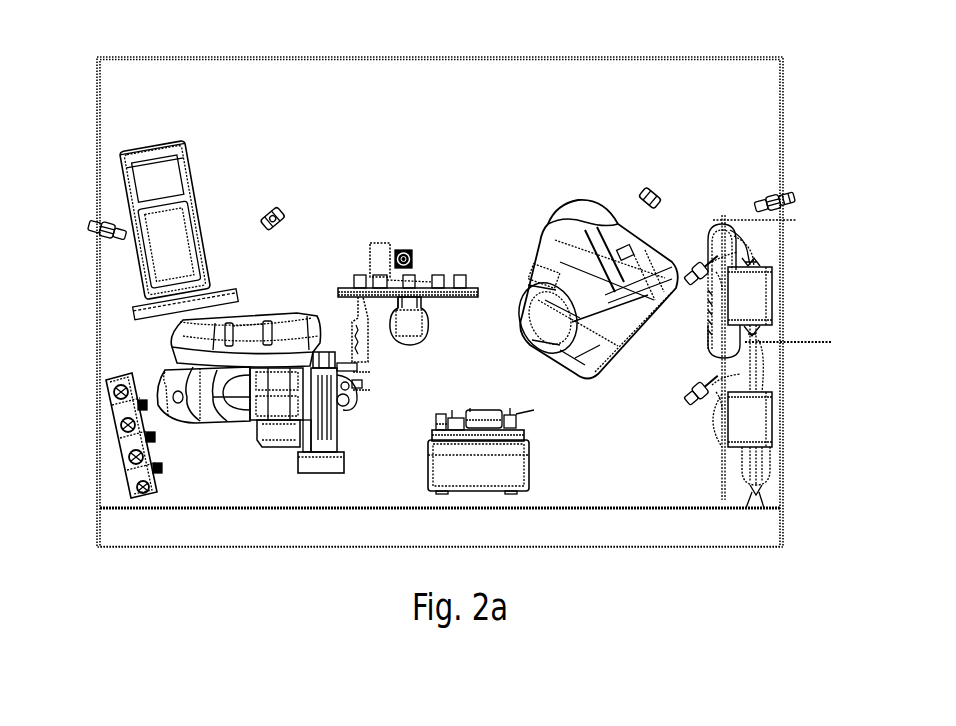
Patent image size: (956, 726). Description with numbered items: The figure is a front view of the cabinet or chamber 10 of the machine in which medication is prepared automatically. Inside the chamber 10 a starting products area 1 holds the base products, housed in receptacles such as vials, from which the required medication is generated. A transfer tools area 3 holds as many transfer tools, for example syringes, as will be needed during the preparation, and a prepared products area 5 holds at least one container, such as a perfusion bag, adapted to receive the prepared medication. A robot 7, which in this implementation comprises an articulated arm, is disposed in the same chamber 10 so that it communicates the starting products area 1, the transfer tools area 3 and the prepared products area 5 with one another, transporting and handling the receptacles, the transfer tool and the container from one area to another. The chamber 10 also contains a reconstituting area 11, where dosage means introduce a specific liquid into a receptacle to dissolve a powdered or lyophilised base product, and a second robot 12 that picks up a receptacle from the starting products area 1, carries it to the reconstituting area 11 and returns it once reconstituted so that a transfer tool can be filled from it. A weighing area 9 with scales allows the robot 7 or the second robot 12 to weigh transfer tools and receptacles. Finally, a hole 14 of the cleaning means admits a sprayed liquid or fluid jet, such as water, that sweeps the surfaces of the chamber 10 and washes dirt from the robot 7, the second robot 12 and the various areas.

The chamber 10 is at (430, 90).
The prepared products area 5 is at (112, 203).
The hole 14 is at (275, 210).
The robot 7 is at (250, 334).
The starting products area 1 is at (426, 256).
The second robot 12 is at (596, 200).
The reconstituting area 11 is at (766, 176).
The weighing area 9 is at (538, 458).
The transfer tools area 3 is at (110, 460).